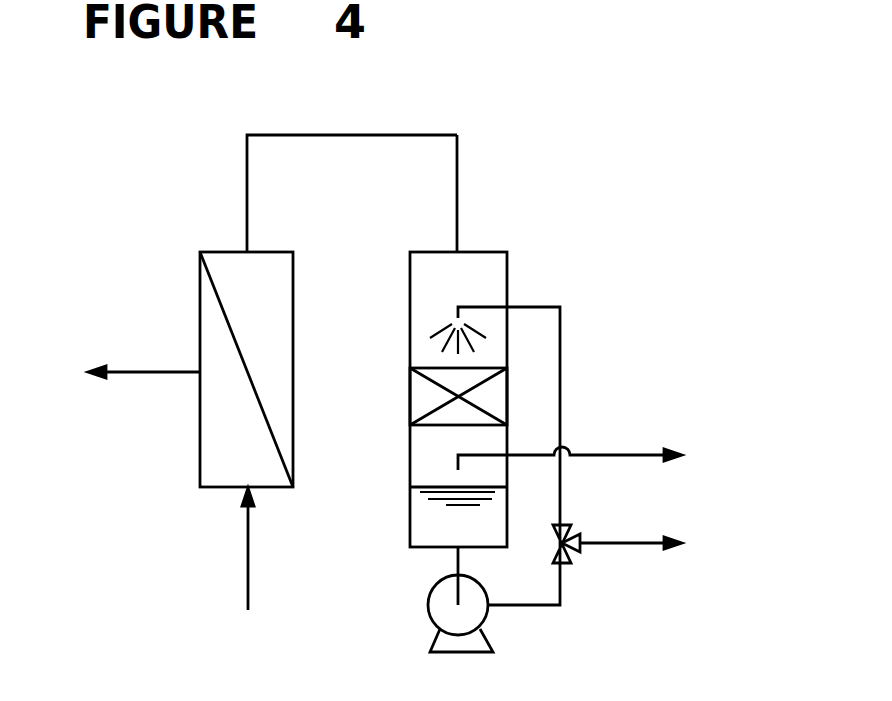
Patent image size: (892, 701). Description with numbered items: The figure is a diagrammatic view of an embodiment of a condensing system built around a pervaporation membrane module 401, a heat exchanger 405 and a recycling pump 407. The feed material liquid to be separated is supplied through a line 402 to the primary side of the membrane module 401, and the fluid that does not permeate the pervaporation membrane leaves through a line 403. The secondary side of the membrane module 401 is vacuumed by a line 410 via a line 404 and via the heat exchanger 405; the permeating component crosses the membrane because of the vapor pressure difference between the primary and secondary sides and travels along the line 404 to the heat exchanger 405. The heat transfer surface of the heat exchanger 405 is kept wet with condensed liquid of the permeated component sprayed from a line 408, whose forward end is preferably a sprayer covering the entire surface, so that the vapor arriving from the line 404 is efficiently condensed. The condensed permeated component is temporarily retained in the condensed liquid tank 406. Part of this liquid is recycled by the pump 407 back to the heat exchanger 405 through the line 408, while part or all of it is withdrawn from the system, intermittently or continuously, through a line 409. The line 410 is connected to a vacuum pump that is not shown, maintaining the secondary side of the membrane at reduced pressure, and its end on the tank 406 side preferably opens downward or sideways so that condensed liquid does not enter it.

The pervaporation membrane module 401 is at (200, 458).
The line 402 is at (248, 541).
The line 403 is at (143, 372).
The line 404 is at (247, 180).
The heat exchanger 405 is at (422, 392).
The condensed liquid tank 406 is at (436, 528).
The recycling pump 407 is at (428, 612).
The line 408 is at (457, 175).
The line 409 is at (655, 544).
The line 410 is at (607, 447).